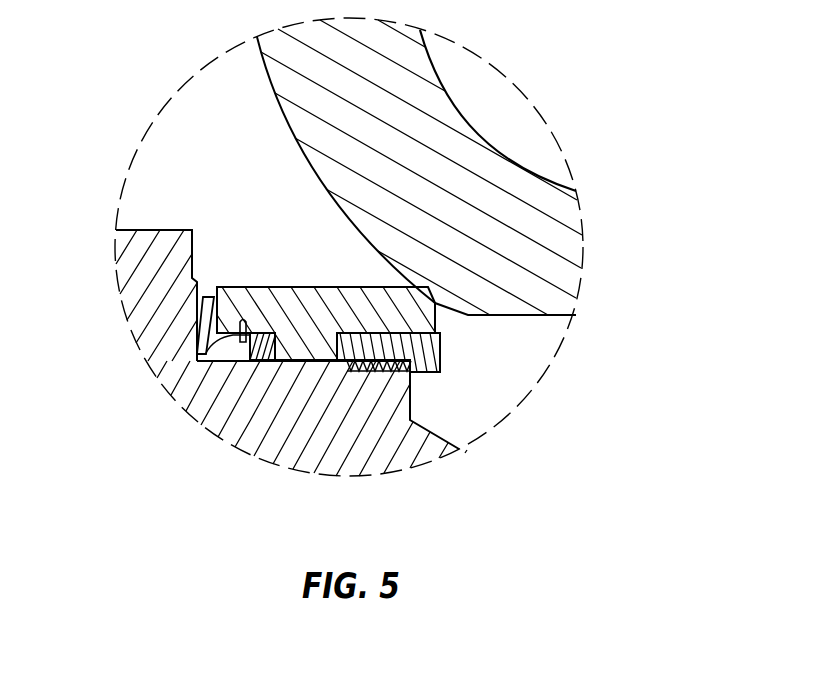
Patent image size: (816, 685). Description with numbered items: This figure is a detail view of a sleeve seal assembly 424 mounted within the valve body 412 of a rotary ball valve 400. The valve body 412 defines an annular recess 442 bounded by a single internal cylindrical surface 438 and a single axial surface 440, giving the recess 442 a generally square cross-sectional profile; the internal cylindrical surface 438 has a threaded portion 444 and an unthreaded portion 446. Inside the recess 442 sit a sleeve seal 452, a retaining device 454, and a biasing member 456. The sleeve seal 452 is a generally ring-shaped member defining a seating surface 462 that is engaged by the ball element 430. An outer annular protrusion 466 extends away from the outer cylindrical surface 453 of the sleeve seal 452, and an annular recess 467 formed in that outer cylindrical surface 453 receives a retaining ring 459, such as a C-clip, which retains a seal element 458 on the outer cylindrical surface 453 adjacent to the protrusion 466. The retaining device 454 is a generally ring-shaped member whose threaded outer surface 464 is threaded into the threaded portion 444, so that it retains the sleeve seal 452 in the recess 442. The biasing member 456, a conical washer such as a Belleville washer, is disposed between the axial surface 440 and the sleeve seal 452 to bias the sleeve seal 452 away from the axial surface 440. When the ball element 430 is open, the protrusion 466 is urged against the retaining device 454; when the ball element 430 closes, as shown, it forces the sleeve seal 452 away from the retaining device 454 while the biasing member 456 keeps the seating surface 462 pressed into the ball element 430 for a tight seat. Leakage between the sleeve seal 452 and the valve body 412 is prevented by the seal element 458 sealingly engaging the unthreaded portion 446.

The valve 400 is at (238, 432).
The valve body 412 is at (290, 423).
The seal assembly 424 is at (270, 268).
The ball element 430 is at (467, 150).
The internal cylindrical surface 438 is at (501, 415).
The axial surface 440 is at (194, 271).
The annular recess 442 is at (207, 258).
The threaded portion 444 is at (427, 368).
The unthreaded portion 446 is at (176, 406).
The sleeve seal 452 is at (330, 287).
The outer cylindrical surface 453 is at (440, 352).
The retaining device 454 is at (400, 363).
The biasing member 456 is at (197, 332).
The seal element 458 is at (262, 350).
The retaining ring 459 is at (195, 358).
The seating surface 462 is at (430, 285).
The threaded outer surface 464 is at (366, 375).
The outer annular protrusion 466 is at (307, 363).
The annular recess 467 is at (242, 320).